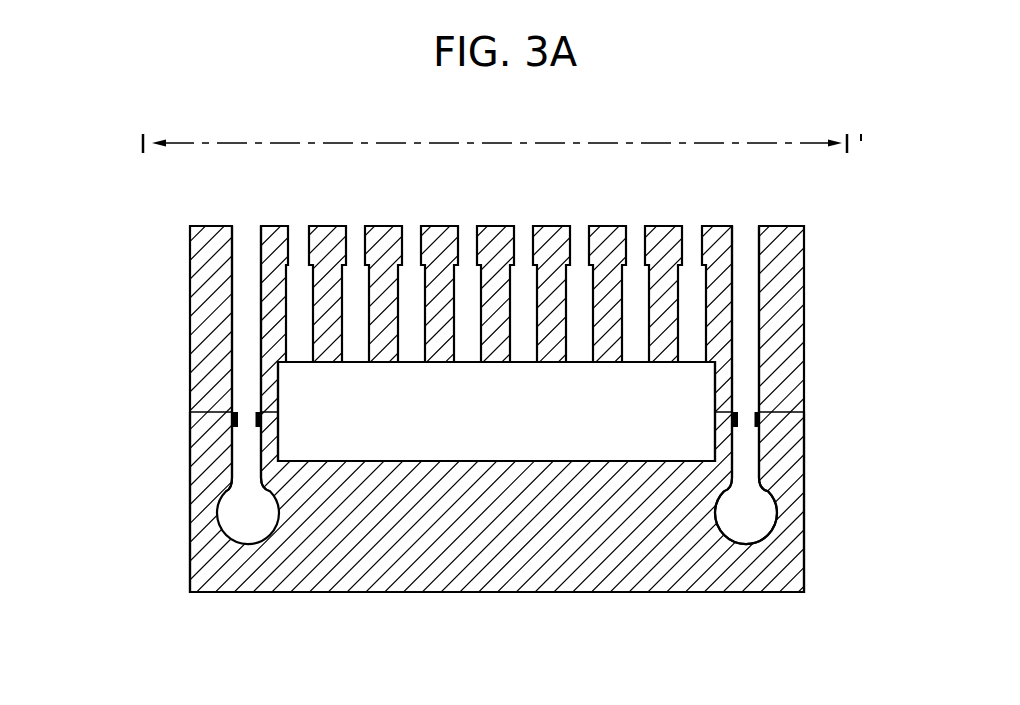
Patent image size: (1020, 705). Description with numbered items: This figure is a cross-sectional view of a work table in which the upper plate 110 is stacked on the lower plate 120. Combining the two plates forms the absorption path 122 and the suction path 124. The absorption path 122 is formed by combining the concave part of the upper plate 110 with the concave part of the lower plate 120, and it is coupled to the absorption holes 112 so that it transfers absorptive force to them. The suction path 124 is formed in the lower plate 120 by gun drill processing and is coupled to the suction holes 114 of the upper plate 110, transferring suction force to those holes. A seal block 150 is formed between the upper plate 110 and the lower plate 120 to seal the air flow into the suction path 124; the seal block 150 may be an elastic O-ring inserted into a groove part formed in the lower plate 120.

The upper plate 110 is at (190, 312).
The absorption holes 112 is at (293, 241).
The suction holes 114 is at (738, 241).
The lower plate 120 is at (190, 505).
The absorption path 122 is at (472, 432).
The suction path 124 is at (768, 510).
The seal block 150 is at (233, 418).